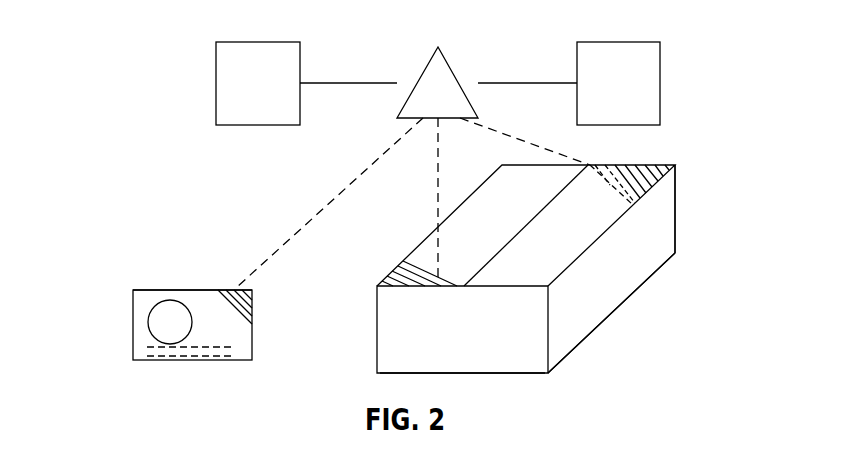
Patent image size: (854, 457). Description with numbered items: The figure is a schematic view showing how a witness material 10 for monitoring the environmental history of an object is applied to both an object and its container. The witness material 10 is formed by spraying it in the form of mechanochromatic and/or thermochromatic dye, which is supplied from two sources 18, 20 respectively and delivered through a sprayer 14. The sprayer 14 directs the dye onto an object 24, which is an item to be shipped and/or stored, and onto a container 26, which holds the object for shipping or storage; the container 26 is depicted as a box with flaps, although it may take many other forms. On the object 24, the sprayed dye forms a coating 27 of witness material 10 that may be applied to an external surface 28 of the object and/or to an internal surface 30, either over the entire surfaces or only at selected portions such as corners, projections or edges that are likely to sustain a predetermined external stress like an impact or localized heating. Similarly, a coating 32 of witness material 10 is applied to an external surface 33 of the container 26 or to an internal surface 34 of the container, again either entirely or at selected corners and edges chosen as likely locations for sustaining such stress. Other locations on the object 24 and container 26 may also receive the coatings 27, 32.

The witness material 10 is at (681, 177).
The sprayer 14 is at (447, 75).
The source of mechanochromatic dye 18 is at (650, 72).
The source of thermochromatic dye 20 is at (228, 68).
The object 24 is at (168, 288).
The container 26 is at (600, 288).
The coating 27 is at (252, 303).
The external surface 28 is at (242, 332).
The internal surface 30 is at (140, 328).
The coating 32 is at (393, 273).
The external surface 33 is at (488, 350).
The internal surface 34 is at (658, 202).